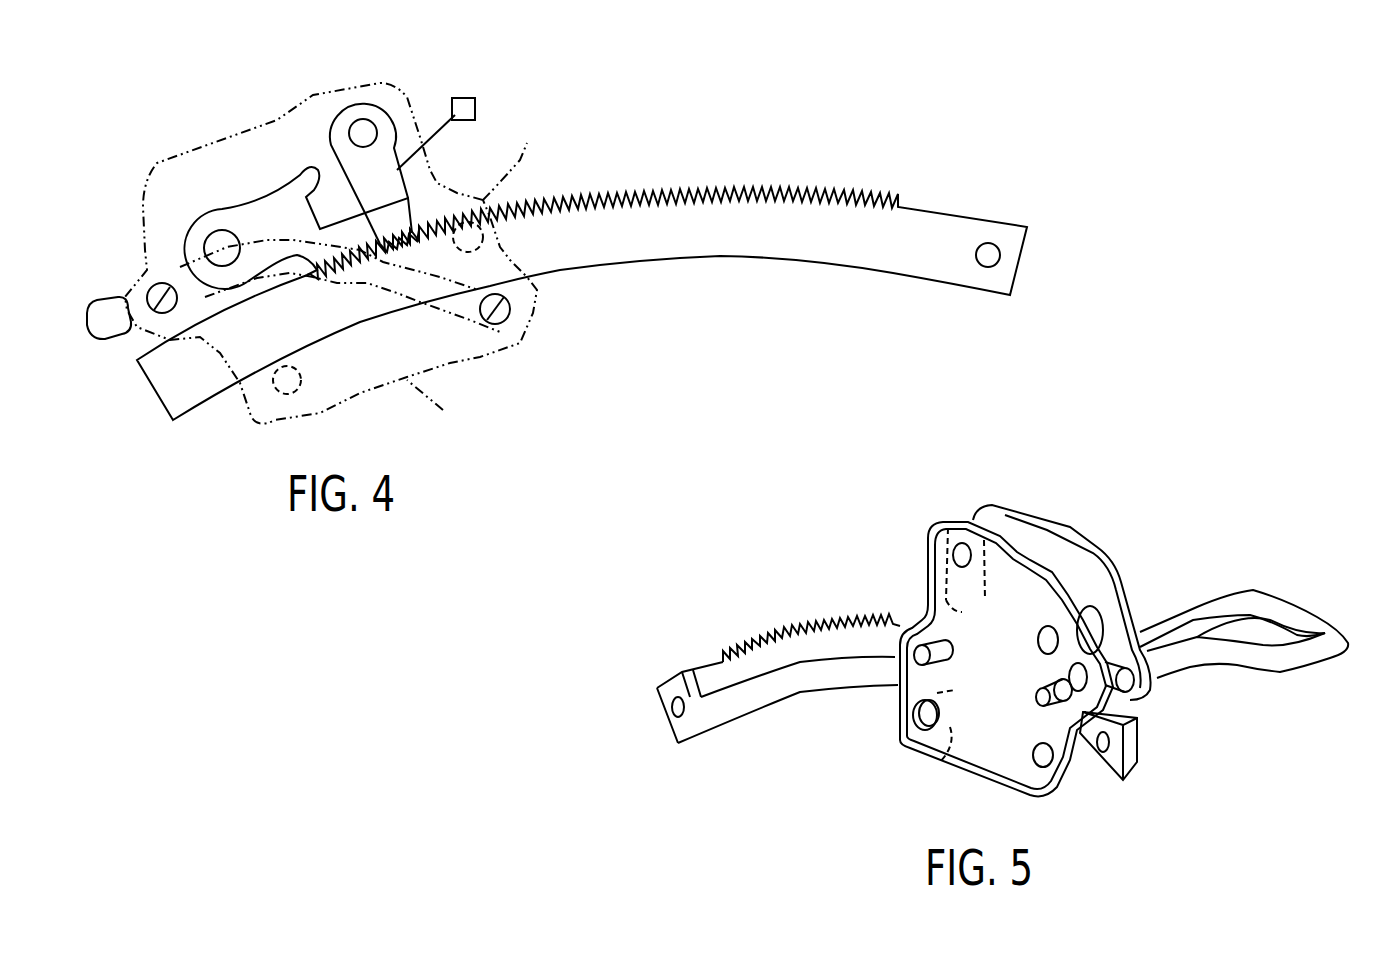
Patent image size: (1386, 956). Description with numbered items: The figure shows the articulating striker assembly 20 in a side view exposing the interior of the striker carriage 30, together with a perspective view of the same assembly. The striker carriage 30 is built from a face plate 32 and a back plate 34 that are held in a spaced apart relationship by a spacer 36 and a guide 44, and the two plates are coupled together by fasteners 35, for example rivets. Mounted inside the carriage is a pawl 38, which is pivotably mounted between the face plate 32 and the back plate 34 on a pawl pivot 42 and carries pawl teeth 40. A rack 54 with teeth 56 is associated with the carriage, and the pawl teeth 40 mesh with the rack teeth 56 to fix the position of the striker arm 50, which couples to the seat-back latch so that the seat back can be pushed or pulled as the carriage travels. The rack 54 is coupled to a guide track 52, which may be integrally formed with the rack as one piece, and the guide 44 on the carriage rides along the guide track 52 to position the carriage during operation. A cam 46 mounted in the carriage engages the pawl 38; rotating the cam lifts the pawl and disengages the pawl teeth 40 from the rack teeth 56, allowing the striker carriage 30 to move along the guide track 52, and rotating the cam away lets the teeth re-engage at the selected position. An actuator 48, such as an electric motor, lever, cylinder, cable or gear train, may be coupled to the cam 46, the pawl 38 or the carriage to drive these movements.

In FIG. 4, the articulating striker assembly 20 is at (293, 82).
In FIG. 5, the articulating striker assembly 20 is at (1217, 473).
In FIG. 4, the striker carriage 30 is at (445, 405).
In FIG. 5, the striker carriage 30 is at (1047, 533).
In FIG. 4, the face plate 32 is at (504, 188).
In FIG. 5, the face plate 32 is at (1073, 530).
In FIG. 4, the back plate 34 is at (450, 363).
In FIG. 5, the back plate 34 is at (929, 531).
In FIG. 4, the fasteners 35 is at (250, 413).
In FIG. 5, the fasteners 35 is at (1047, 768).
In FIG. 4, the spacer 36 is at (150, 290).
In FIG. 5, the spacer 36 is at (1130, 692).
In FIG. 4, the pawl 38 is at (247, 217).
In FIG. 5, the pawl 38 is at (1096, 605).
In FIG. 4, the pawl teeth 40 is at (413, 228).
In FIG. 4, the pawl pivot 42 is at (210, 237).
In FIG. 5, the pawl pivot 42 is at (1040, 632).
In FIG. 4, the guide 44 is at (511, 311).
In FIG. 5, the guide 44 is at (945, 760).
In FIG. 4, the cam 46 is at (380, 104).
In FIG. 5, the cam 46 is at (950, 528).
In FIG. 4, the actuator 48 is at (462, 98).
In FIG. 4, the striker arm 50 is at (93, 328).
In FIG. 5, the striker arm 50 is at (1295, 670).
In FIG. 5, the guide track 52 is at (860, 690).
In FIG. 4, the rack 54 is at (943, 227).
In FIG. 5, the rack 54 is at (806, 626).
In FIG. 4, the rack teeth 56 is at (657, 193).
In FIG. 5, the rack teeth 56 is at (872, 625).